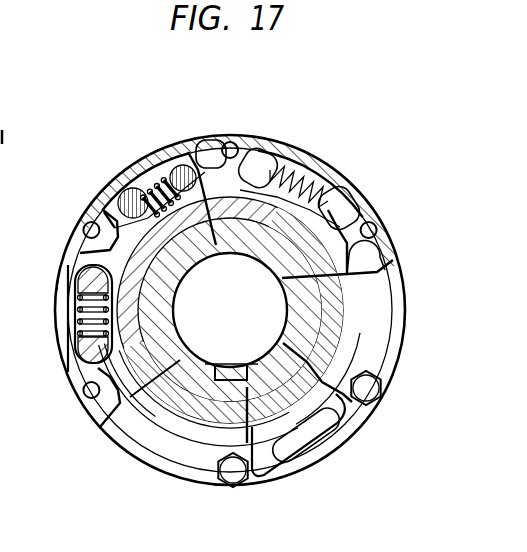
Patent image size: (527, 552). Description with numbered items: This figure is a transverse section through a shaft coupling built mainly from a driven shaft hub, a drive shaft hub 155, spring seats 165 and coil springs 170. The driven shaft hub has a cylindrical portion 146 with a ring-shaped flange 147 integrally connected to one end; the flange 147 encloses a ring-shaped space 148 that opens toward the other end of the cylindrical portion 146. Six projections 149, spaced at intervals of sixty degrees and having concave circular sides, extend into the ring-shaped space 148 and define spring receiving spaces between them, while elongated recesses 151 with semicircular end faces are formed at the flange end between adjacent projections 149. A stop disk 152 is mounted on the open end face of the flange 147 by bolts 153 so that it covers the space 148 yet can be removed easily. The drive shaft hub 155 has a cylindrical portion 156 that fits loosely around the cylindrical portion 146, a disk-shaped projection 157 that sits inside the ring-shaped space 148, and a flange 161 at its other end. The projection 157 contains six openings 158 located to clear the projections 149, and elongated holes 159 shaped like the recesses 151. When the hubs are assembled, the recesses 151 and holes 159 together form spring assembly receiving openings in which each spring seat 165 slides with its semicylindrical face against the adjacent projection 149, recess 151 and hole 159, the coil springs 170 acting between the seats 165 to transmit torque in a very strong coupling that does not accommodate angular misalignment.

The cylindrical portion 146 is at (183, 267).
The ring-shaped flange 147 is at (100, 220).
The ring-shaped space 148 is at (302, 165).
The projections 149 is at (237, 160).
The elongated recesses 151 is at (327, 427).
The stop disk 152 is at (384, 365).
The bolts 153 is at (368, 393).
The drive shaft hub 155 is at (29, 240).
The cylindrical portion 156 is at (212, 234).
The disk-shaped projection 157 is at (113, 213).
The openings 158 is at (83, 247).
The elongated holes 159 is at (82, 334).
The flange 161 is at (11, 159).
The spring seat 165 is at (338, 202).
The coil springs 170 is at (80, 298).